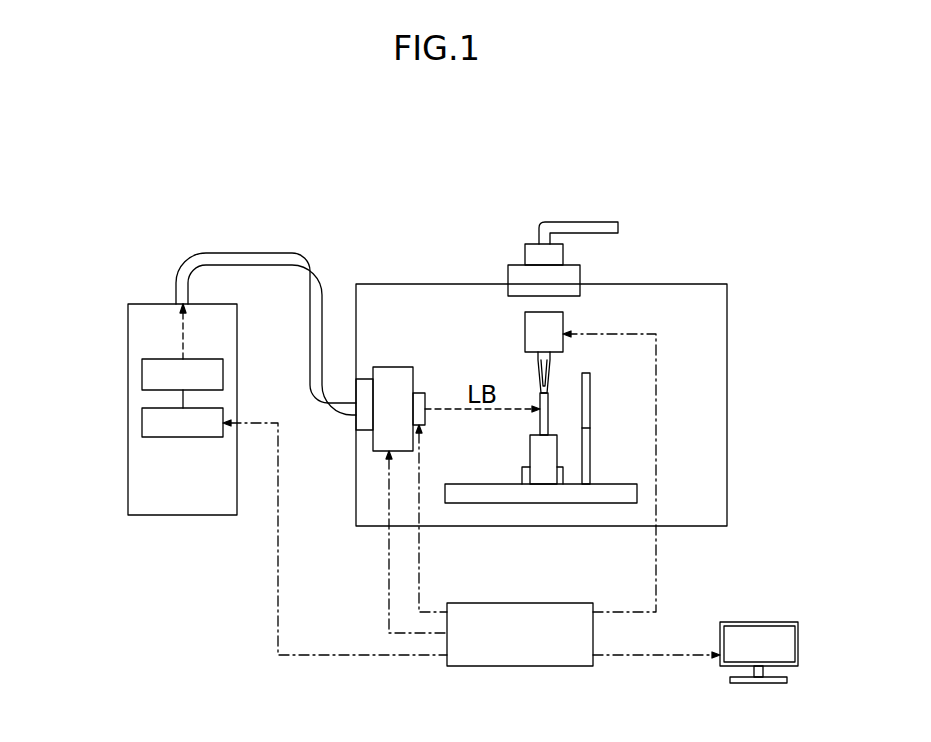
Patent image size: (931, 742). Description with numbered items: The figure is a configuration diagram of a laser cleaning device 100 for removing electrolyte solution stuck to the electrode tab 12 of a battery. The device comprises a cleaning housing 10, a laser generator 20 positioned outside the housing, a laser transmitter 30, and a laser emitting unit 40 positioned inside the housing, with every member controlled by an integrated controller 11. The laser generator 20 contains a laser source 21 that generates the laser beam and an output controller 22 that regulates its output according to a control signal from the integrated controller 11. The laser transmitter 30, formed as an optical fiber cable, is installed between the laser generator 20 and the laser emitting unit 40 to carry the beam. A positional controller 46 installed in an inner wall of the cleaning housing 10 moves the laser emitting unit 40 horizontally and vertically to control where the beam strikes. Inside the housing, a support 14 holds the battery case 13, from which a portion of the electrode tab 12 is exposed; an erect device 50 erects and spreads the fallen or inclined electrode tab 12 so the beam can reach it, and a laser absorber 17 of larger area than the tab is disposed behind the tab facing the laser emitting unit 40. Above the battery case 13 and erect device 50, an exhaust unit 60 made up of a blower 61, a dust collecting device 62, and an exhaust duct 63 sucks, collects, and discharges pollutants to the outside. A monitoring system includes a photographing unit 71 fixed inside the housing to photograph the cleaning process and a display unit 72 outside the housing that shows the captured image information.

The laser cleaning device 100 is at (473, 146).
The cleaning housing 10 is at (727, 438).
The integrated controller 11 is at (534, 644).
The electrode tab 12 is at (540, 416).
The battery case 13 is at (545, 475).
The support 14 is at (478, 492).
The laser absorber 17 is at (591, 401).
The laser generator 20 is at (126, 473).
The laser source 21 is at (142, 375).
The output controller 22 is at (142, 424).
The laser transmitter 30 is at (248, 257).
The laser emitting unit 40 is at (397, 357).
The positional controller 46 is at (363, 422).
The erect device 50 is at (583, 307).
The exhaust unit 60 is at (520, 239).
The blower 61 is at (525, 252).
The dust collecting device 62 is at (510, 270).
The exhaust duct 63 is at (539, 229).
The photographing unit 71 is at (419, 393).
The display unit 72 is at (777, 635).